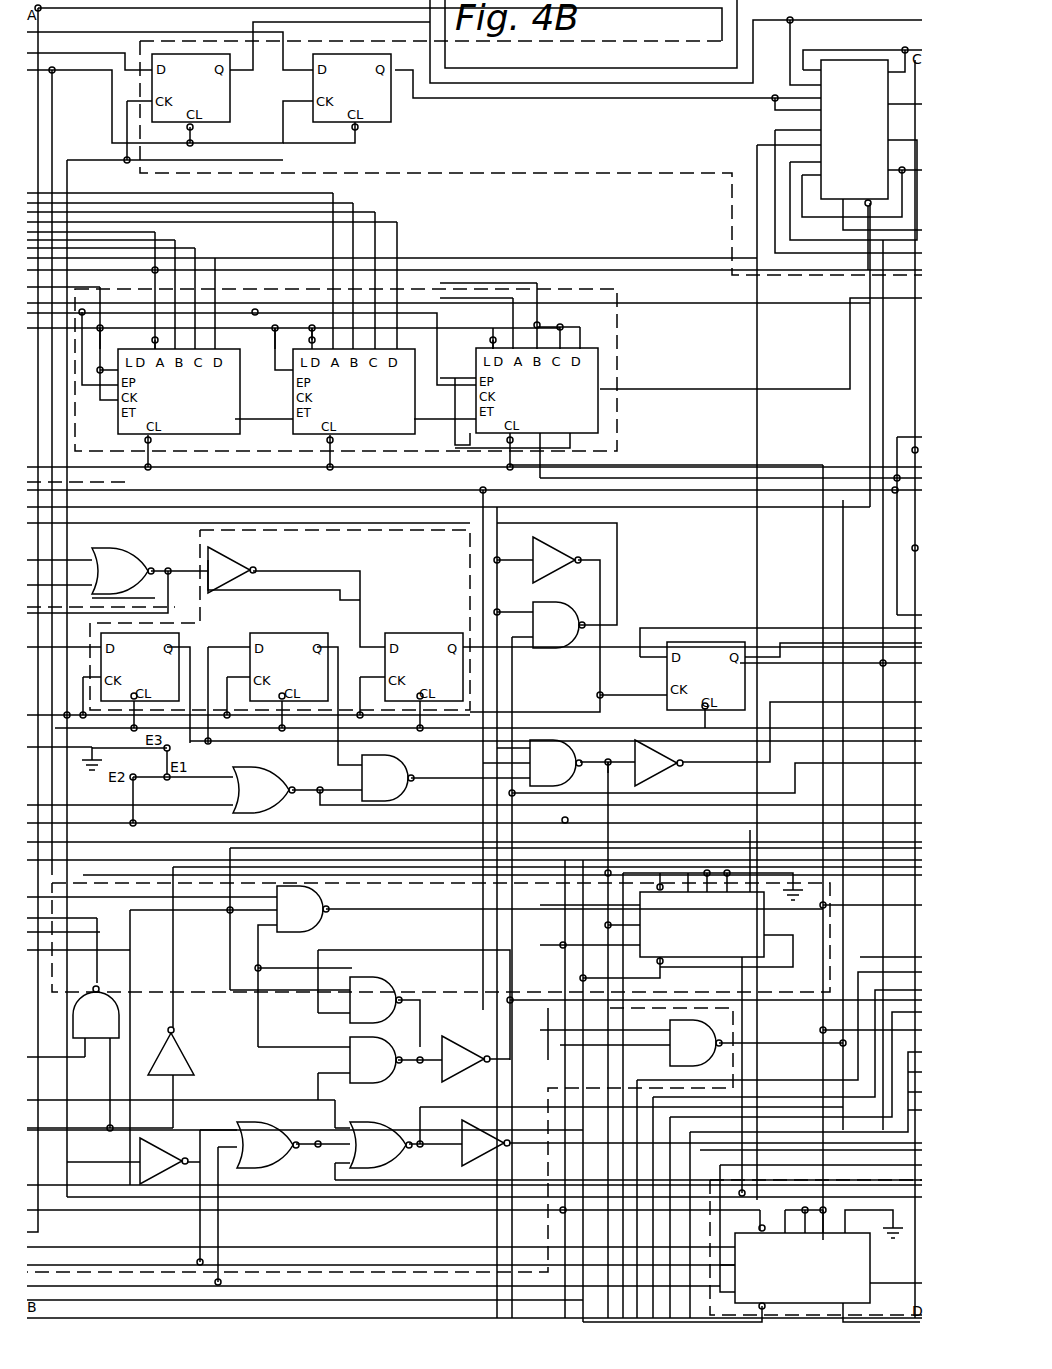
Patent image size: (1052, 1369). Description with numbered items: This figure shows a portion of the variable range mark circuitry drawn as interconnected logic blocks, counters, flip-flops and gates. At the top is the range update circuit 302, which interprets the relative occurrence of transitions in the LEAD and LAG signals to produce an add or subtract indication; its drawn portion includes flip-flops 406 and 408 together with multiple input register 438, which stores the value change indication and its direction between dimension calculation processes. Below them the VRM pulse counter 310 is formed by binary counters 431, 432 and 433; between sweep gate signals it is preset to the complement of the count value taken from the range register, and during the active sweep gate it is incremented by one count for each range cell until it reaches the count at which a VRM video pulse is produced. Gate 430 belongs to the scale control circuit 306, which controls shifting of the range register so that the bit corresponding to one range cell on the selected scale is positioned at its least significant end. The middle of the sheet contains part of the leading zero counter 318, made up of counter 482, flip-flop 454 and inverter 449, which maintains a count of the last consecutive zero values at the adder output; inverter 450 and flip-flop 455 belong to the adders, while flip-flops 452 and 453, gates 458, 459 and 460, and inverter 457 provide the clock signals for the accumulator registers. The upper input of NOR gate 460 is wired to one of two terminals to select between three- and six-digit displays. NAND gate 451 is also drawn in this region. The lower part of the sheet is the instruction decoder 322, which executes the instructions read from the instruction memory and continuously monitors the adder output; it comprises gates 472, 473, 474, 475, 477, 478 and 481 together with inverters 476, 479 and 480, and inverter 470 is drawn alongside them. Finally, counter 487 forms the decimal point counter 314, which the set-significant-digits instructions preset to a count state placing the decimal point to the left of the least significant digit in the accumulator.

The range update circuit 302 is at (558, 173).
The scale control circuit 306 is at (155, 487).
The VRM pulse counter 310 is at (617, 305).
The decimal point counter 314 is at (843, 1180).
The leading zero counter 318 is at (338, 530).
The instruction decoder 322 is at (733, 1032).
The flip-flop 406 is at (191, 88).
The flip-flop 408 is at (337, 98).
The gate 430 is at (105, 565).
The binary counter 431 is at (161, 389).
The binary counter 432 is at (355, 397).
The binary counter 433 is at (681, 388).
The multiple input register 438 is at (820, 128).
The inverter 449 is at (225, 565).
The inverter 450 is at (553, 562).
The NAND gate 451 is at (549, 612).
The flip-flop 452 is at (108, 688).
The flip-flop 453 is at (283, 699).
The flip-flop 454 is at (639, 682).
The flip-flop 455 is at (696, 678).
The inverter 457 is at (660, 772).
The gate 458 is at (563, 770).
The gate 459 is at (405, 775).
The NOR gate 460 is at (258, 780).
The inverter 470 is at (172, 1140).
The gate 472 is at (262, 1140).
The gate 473 is at (368, 1135).
The gate 474 is at (110, 1010).
The gate 475 is at (305, 915).
The inverter 476 is at (170, 1058).
The gate 477 is at (350, 1005).
The gate 478 is at (350, 1062).
The inverter 479 is at (482, 1138).
The inverter 480 is at (458, 1065).
The gate 481 is at (685, 1027).
The counter 482 is at (731, 905).
The counter 487 is at (741, 1243).